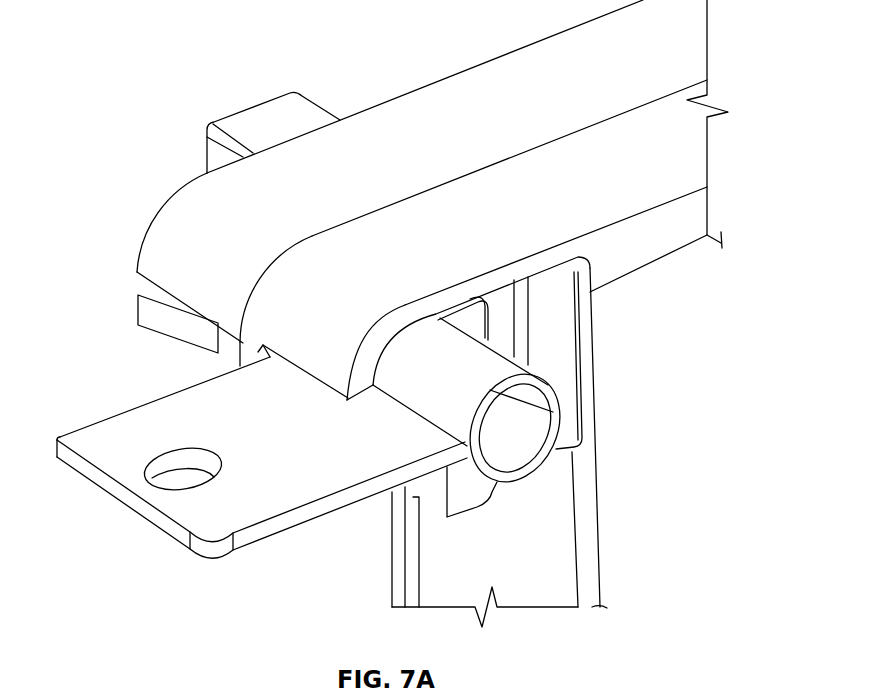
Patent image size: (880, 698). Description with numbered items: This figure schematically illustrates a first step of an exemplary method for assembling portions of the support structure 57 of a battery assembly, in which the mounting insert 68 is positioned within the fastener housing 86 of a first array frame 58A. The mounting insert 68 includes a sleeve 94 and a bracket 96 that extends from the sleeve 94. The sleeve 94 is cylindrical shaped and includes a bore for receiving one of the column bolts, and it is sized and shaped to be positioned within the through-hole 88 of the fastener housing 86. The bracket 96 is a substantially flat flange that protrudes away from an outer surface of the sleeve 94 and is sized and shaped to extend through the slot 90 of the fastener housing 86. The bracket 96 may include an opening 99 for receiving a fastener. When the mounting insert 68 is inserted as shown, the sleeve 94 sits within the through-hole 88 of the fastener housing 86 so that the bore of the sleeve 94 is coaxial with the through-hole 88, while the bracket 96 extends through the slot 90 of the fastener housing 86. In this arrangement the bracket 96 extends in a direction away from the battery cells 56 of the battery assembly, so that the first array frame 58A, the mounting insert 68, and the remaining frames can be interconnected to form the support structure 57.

The support structure 57 is at (320, 46).
The first array frame 58A is at (683, 134).
The fastener housing 86 is at (330, 308).
The through-hole 88 is at (420, 333).
The slot 90 is at (280, 353).
The sleeve 94 is at (437, 340).
The bracket 96 is at (140, 420).
The opening 99 is at (193, 477).
The mounting insert 68 is at (263, 497).
The battery cells 56 is at (632, 417).